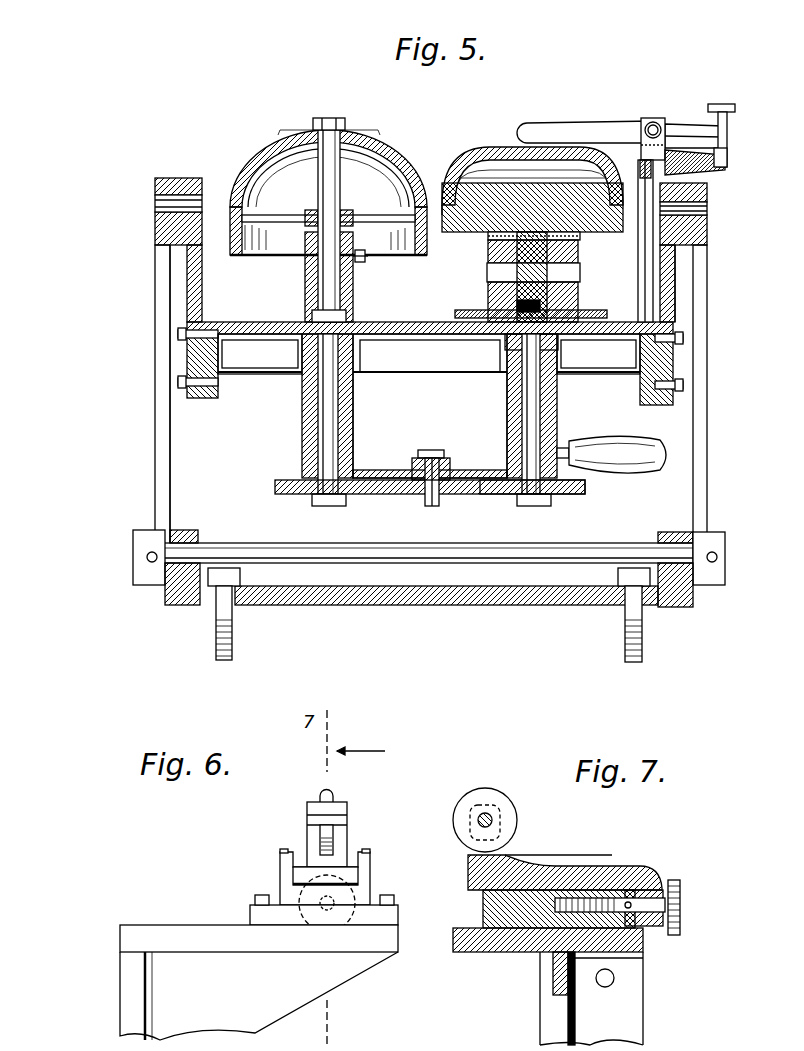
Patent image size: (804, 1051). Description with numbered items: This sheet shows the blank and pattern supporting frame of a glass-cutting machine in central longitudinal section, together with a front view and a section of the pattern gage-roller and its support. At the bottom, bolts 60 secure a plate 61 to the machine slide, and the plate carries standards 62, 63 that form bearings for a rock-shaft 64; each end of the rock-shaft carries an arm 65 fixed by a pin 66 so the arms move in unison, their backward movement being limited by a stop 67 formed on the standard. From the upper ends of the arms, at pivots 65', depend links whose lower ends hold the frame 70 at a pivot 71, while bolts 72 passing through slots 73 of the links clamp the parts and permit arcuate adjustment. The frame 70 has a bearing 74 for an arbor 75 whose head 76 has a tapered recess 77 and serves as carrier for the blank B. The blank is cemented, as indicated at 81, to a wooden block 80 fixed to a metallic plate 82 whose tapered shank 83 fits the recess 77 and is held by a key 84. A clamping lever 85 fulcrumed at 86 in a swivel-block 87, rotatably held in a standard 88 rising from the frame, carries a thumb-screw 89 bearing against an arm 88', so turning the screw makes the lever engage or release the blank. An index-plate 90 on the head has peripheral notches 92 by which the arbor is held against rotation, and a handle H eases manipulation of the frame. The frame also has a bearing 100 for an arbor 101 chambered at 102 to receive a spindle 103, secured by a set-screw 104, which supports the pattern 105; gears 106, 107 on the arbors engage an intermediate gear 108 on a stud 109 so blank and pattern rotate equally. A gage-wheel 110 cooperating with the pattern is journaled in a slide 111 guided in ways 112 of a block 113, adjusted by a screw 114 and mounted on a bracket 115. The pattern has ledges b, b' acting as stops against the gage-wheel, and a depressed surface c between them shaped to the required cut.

In FIG. 5, the bolts 60 is at (232, 626).
In FIG. 5, the plate 61 is at (414, 600).
In FIG. 5, the standard 62 is at (190, 530).
In FIG. 5, the standard 63 is at (673, 532).
In FIG. 5, the rock-shaft 64 is at (482, 548).
In FIG. 5, the arm 65 is at (431, 363).
In FIG. 5, the pivot 65' is at (434, 201).
In FIG. 5, the pin 66 is at (147, 558).
In FIG. 5, the link 67 is at (198, 300).
In FIG. 5, the frame 70 is at (405, 360).
In FIG. 5, the pivot 71 is at (180, 383).
In FIG. 5, the bolt 72 is at (180, 334).
In FIG. 5, the slot 73 is at (190, 350).
In FIG. 5, the bearing 74 is at (508, 406).
In FIG. 5, the arbor 75 is at (536, 408).
In FIG. 5, the head 76 is at (578, 252).
In FIG. 5, the tapered recess 77 is at (578, 296).
In FIG. 5, the block 80 is at (492, 232).
In FIG. 5, the sealing-wax 81 is at (445, 207).
In FIG. 5, the metallic plate 82 is at (490, 245).
In FIG. 5, the tapered shank 83 is at (520, 304).
In FIG. 5, the key 84 is at (580, 272).
In FIG. 5, the lever 85 is at (588, 130).
In FIG. 5, the fulcrum 86 is at (655, 125).
In FIG. 5, the swivel-block 87 is at (660, 128).
In FIG. 5, the standard 88 is at (691, 241).
In FIG. 5, the arm 88' is at (715, 159).
In FIG. 5, the thumb-screw 89 is at (736, 108).
In FIG. 5, the index-plate 90 is at (470, 334).
In FIG. 5, the notches 92 is at (462, 314).
In FIG. 5, the bearing 100 is at (302, 418).
In FIG. 5, the arbor 101 is at (322, 442).
In FIG. 5, the chamber 102 is at (346, 320).
In FIG. 5, the spindle 103 is at (320, 270).
In FIG. 5, the set-screw 104 is at (360, 258).
In FIG. 5, the pattern 105 is at (320, 182).
In FIG. 5, the gear 106 is at (558, 494).
In FIG. 5, the gear 107 is at (284, 490).
In FIG. 5, the intermediate gear 108 is at (400, 494).
In FIG. 5, the stud 109 is at (430, 500).
In FIG. 6, the gage-wheel 110 is at (333, 800).
In FIG. 7, the gage-wheel 110 is at (480, 792).
In FIG. 6, the slide 111 is at (330, 862).
In FIG. 7, the slide 111 is at (468, 876).
In FIG. 6, the ways 112 is at (358, 872).
In FIG. 6, the block 113 is at (285, 918).
In FIG. 7, the block 113 is at (483, 910).
In FIG. 7, the screw 114 is at (590, 898).
In FIG. 6, the bracket 115 is at (186, 932).
In FIG. 7, the bracket 115 is at (508, 952).
In FIG. 5, the ledge b is at (330, 123).
In FIG. 5, the ledge b' is at (314, 207).
In FIG. 5, the depressed surface c is at (250, 170).
In FIG. 5, the blank B is at (458, 155).
In FIG. 5, the handle H is at (610, 441).